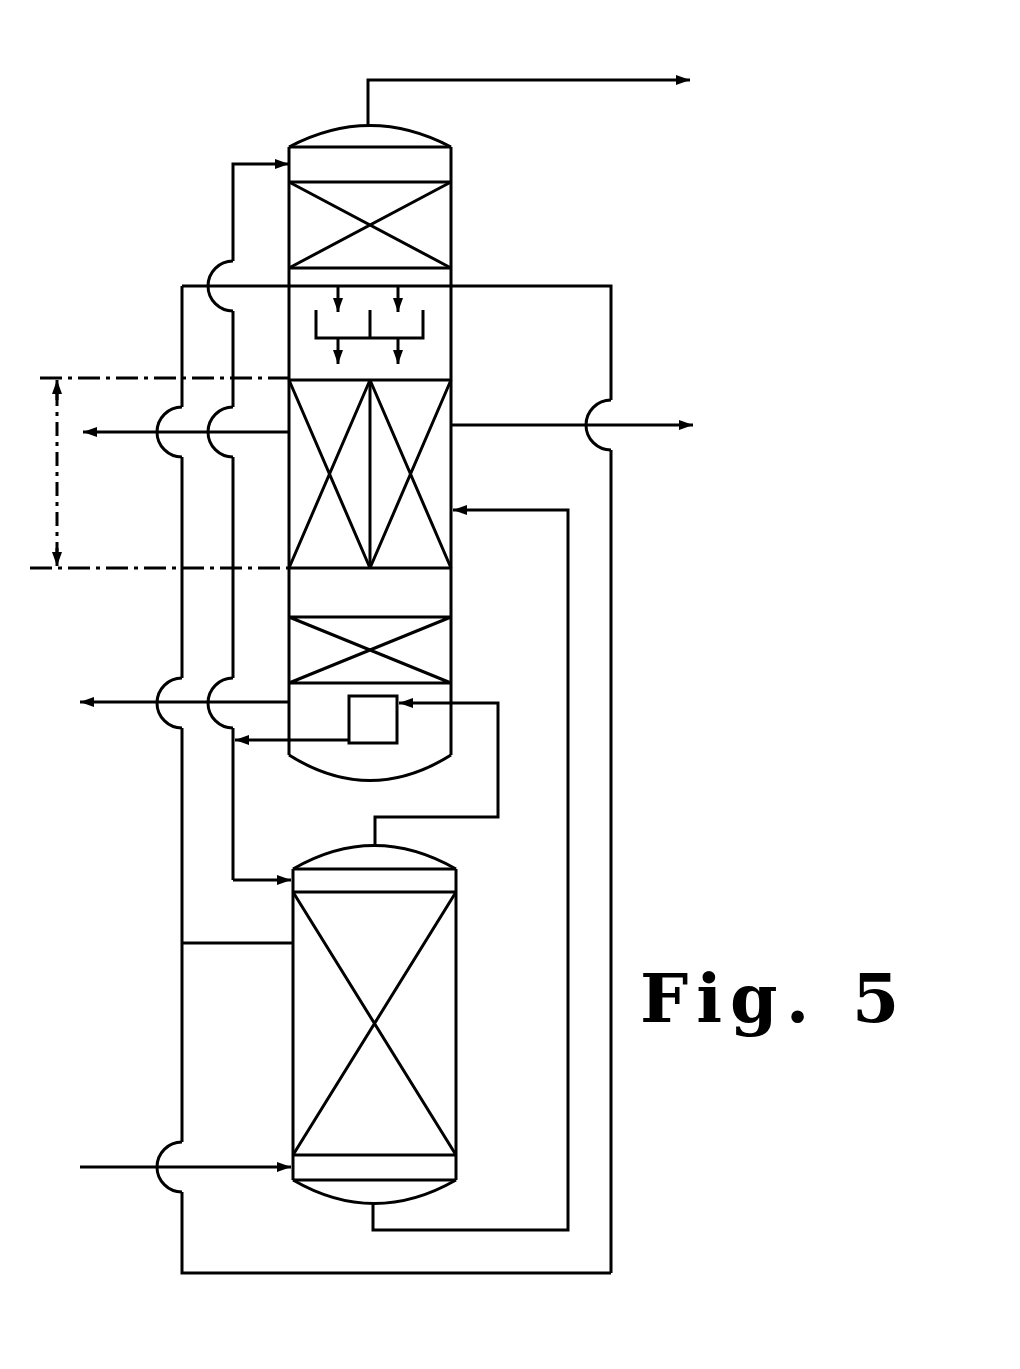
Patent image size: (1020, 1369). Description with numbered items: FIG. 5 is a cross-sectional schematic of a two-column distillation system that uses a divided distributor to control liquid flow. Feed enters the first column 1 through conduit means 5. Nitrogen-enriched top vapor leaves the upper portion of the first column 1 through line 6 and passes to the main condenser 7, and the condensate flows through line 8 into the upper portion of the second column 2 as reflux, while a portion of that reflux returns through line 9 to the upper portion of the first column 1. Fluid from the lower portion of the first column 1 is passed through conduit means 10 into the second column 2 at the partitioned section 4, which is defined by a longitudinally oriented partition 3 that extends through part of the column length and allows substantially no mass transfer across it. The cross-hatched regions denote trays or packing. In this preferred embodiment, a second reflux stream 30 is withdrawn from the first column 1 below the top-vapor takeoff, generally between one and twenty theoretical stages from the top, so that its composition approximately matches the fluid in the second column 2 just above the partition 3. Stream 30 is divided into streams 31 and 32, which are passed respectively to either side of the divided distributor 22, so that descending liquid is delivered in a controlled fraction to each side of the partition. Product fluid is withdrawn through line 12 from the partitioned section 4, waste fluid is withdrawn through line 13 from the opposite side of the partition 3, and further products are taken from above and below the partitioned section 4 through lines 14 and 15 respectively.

The first column 1 is at (293, 993).
The second column 2 is at (451, 250).
The partition 3 is at (370, 422).
The partitioned section 4 is at (289, 520).
The conduit means 5 is at (248, 1165).
The line 6 is at (498, 742).
The main condenser 7 is at (362, 723).
The line 8 is at (233, 612).
The line 9 is at (233, 852).
The conduit means 10 is at (477, 1230).
The line 12 is at (127, 433).
The line 13 is at (568, 425).
The line 14 is at (577, 78).
The line 15 is at (133, 702).
The divided distributor 22 is at (423, 340).
The second reflux stream 30 is at (257, 943).
The stream 31 is at (578, 286).
The stream 32 is at (182, 345).